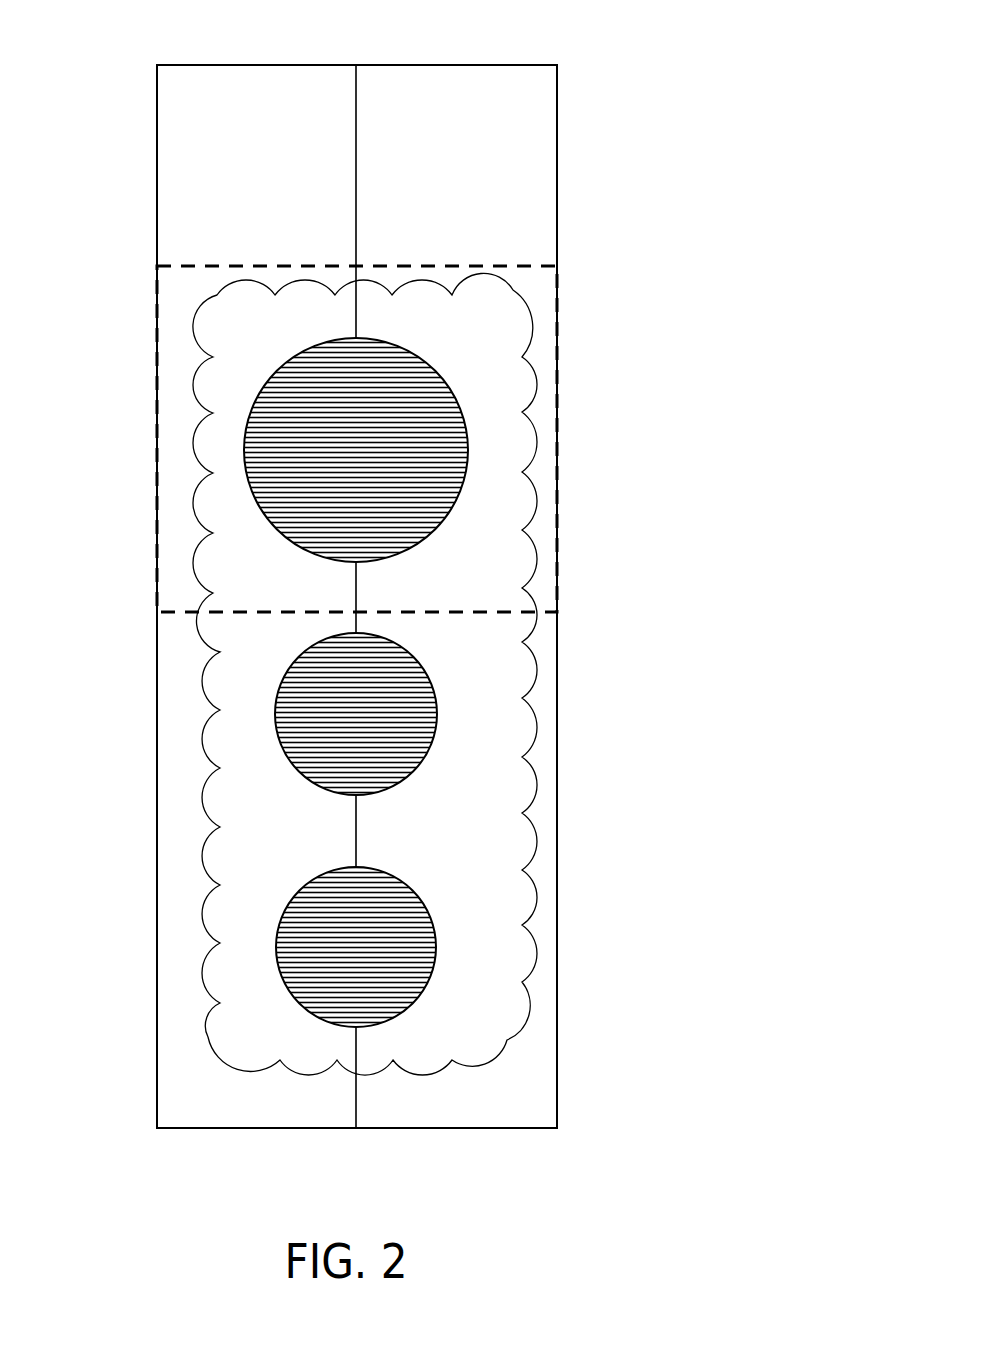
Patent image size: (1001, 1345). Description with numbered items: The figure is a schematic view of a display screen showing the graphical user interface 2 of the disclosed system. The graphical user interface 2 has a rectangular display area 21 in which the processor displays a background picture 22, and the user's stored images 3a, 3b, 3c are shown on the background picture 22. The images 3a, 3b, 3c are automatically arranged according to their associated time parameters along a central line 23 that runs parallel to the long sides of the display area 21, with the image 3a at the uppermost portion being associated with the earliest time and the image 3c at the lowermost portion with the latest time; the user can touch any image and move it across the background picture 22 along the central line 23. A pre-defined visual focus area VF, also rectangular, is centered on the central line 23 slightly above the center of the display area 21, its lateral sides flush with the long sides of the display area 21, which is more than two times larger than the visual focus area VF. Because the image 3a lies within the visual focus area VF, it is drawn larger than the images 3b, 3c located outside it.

The graphical user interface 2 is at (27, 37).
The display area 21 is at (498, 63).
The background picture 22 is at (532, 330).
The central line 23 is at (355, 100).
The image 3a is at (457, 395).
The image 3b is at (435, 702).
The image 3c is at (430, 907).
The visual focus area VF is at (495, 612).